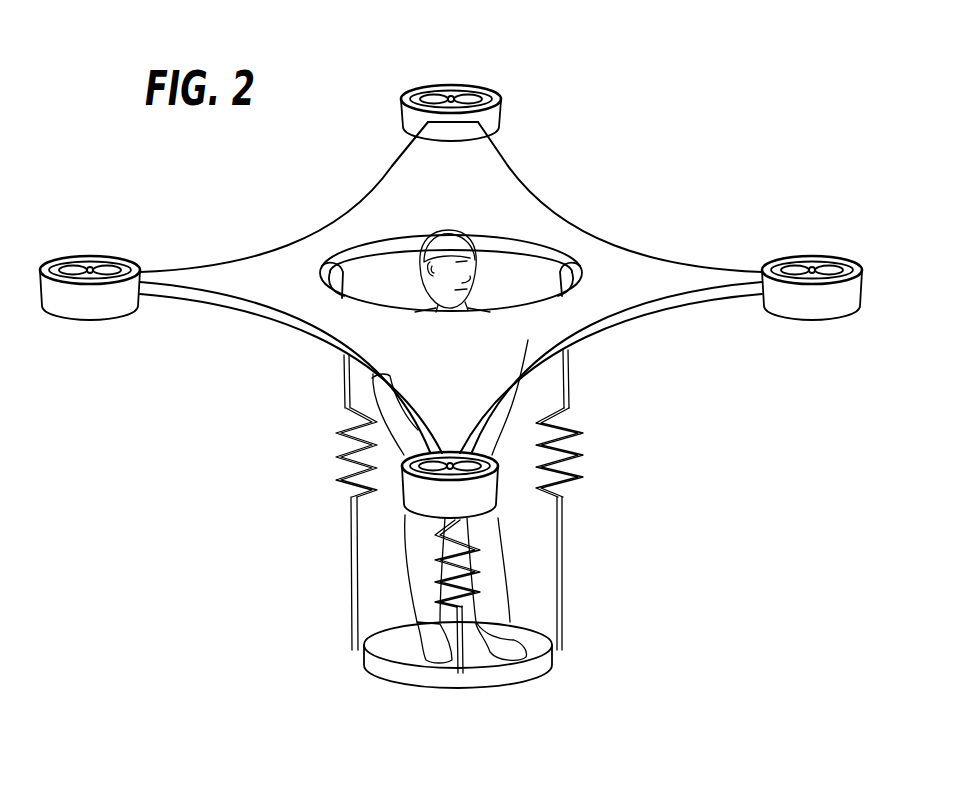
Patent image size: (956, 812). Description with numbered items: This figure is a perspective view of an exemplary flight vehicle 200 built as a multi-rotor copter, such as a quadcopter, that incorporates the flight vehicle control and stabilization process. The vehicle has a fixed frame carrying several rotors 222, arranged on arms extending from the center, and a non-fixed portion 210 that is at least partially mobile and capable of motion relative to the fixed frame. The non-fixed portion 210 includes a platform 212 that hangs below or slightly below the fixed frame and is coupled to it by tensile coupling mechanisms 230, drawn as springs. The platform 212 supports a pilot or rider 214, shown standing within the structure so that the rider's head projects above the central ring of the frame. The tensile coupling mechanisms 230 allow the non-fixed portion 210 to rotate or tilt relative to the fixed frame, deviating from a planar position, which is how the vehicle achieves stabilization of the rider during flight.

The flight vehicle 200 is at (651, 169).
The non-fixed portion 210 is at (400, 686).
The platform 212 is at (533, 643).
The pilot or rider 214 is at (432, 242).
The rotors 222 is at (476, 88).
The tensile coupling mechanisms 230 is at (343, 458).